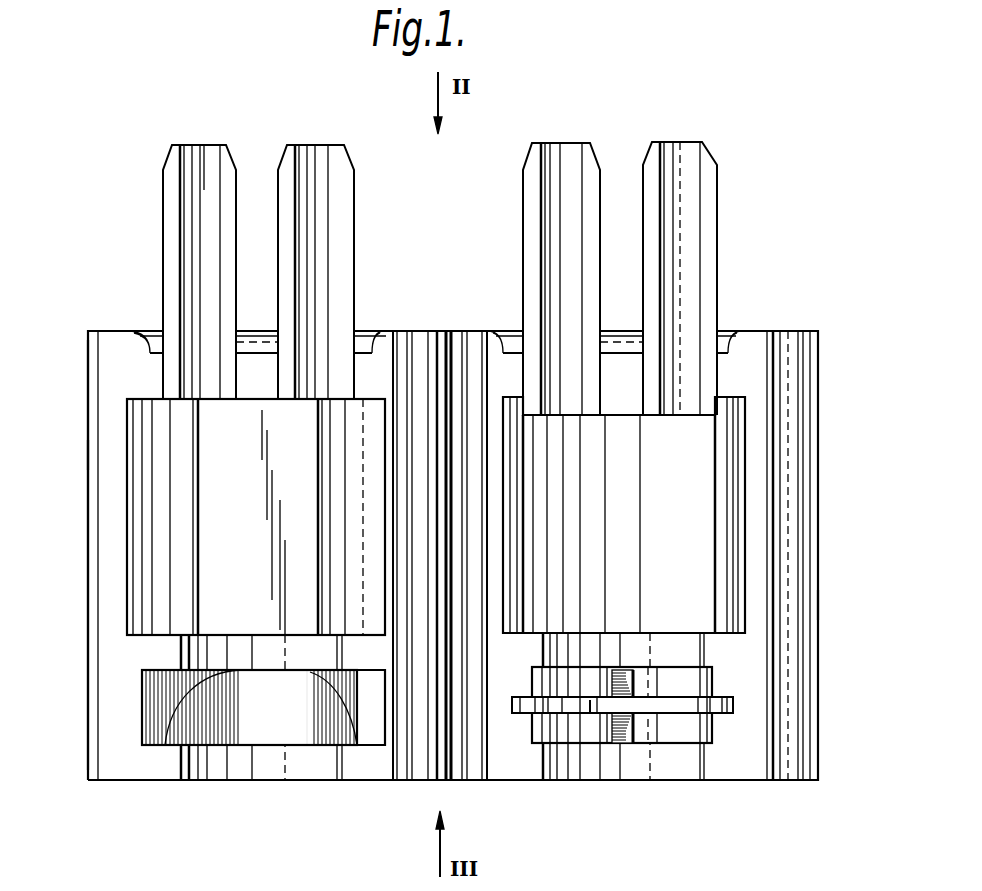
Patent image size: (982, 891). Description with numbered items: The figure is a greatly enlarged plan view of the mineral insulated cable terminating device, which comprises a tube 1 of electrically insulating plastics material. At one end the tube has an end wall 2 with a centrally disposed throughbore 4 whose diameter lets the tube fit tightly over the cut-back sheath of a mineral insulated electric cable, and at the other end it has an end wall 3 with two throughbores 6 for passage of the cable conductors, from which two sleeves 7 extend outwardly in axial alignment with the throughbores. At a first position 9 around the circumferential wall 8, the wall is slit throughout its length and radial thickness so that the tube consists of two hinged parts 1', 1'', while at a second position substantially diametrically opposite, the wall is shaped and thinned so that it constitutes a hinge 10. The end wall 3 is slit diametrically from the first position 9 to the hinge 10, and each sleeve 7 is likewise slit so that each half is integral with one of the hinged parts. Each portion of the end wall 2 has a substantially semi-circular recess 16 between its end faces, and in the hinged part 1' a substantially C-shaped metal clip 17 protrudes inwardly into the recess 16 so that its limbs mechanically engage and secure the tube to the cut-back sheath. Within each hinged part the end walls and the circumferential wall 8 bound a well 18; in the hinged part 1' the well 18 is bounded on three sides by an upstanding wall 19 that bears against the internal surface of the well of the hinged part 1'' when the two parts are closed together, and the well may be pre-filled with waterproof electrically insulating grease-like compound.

The tube 1 is at (453, 589).
The hinged part 1' is at (844, 588).
The hinged part 1'' is at (61, 437).
The end wall 2 is at (743, 760).
The end wall 3 is at (363, 373).
The throughbore 4 is at (190, 760).
The throughbores 6 is at (186, 297).
The sleeves 7 is at (176, 196).
The circumferential wall 8 is at (118, 710).
The first position 9 is at (88, 637).
The hinge 10 is at (450, 357).
The recess 16 is at (307, 728).
The metal clip 17 is at (590, 712).
The well 18 is at (206, 540).
The upstanding wall 19 is at (618, 403).